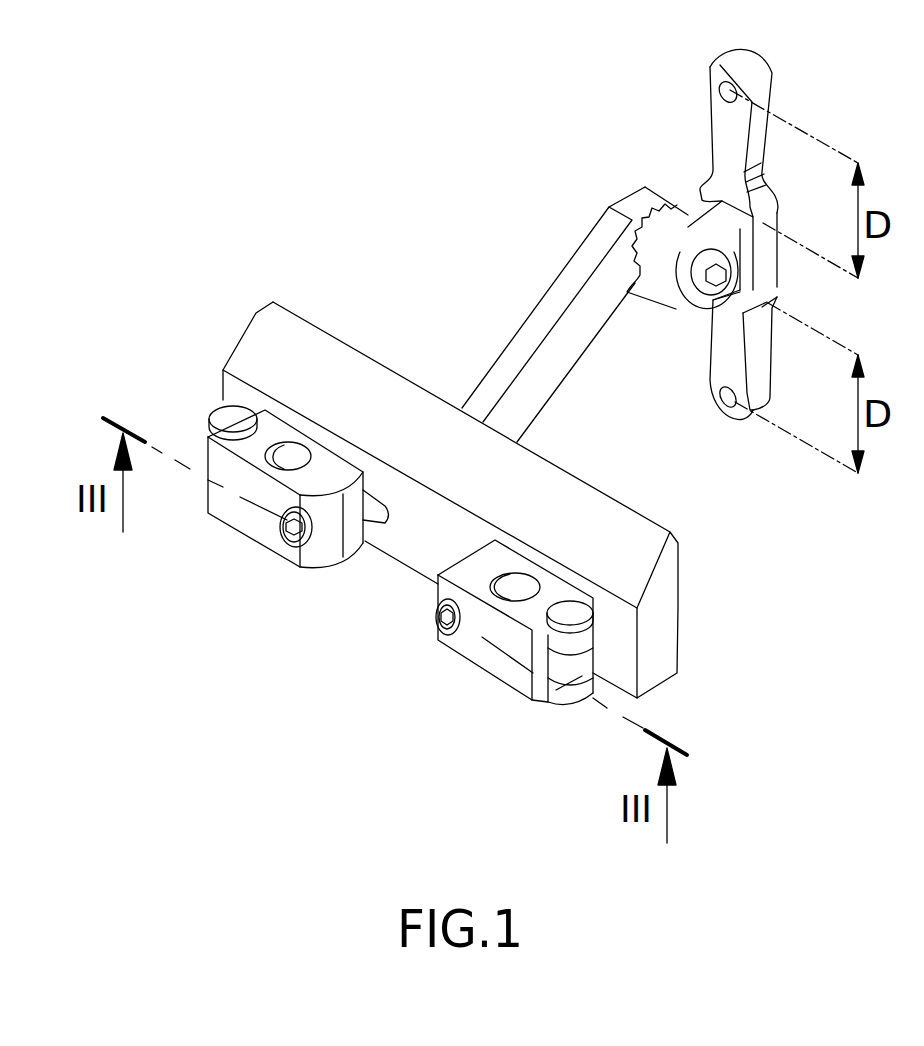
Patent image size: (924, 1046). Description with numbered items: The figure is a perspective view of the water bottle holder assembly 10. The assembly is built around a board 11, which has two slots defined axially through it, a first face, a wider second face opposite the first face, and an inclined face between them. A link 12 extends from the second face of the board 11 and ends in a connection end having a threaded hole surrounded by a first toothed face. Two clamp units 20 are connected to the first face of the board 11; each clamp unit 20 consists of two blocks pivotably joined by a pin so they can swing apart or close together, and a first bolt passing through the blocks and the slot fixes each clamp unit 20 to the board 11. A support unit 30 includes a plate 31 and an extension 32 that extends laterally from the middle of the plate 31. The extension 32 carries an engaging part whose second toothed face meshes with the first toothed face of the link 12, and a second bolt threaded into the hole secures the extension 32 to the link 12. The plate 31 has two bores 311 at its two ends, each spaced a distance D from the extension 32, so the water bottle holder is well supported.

The water bottle holder assembly 10 is at (330, 233).
The board 11 is at (248, 323).
The link 12 is at (560, 288).
The clamp unit 20 is at (247, 553).
The support unit 30 is at (678, 155).
The plate 31 is at (763, 100).
The bore 311 is at (723, 385).
The extension 32 is at (690, 303).